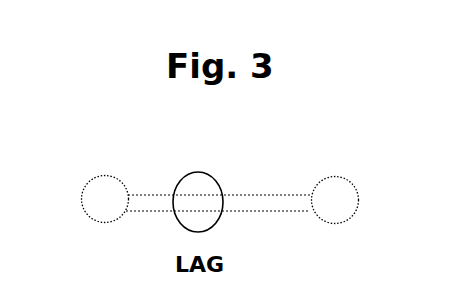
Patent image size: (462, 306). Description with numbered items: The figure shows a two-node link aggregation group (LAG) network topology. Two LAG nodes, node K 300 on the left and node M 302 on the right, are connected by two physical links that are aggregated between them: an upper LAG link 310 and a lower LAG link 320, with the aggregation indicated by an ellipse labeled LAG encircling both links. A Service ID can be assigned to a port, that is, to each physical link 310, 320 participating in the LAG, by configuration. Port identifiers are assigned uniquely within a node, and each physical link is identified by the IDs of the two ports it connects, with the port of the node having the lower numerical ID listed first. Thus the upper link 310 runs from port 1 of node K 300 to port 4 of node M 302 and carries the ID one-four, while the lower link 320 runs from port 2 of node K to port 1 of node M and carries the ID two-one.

The LAG node K 300 is at (79, 199).
The LAG node M 302 is at (361, 200).
The upper LAG link 310 is at (220, 182).
The lower LAG link 320 is at (217, 226).
The port identifier 1 is at (221, 205).
The port identifier 2 is at (136, 225).
The port identifier 4 is at (305, 181).